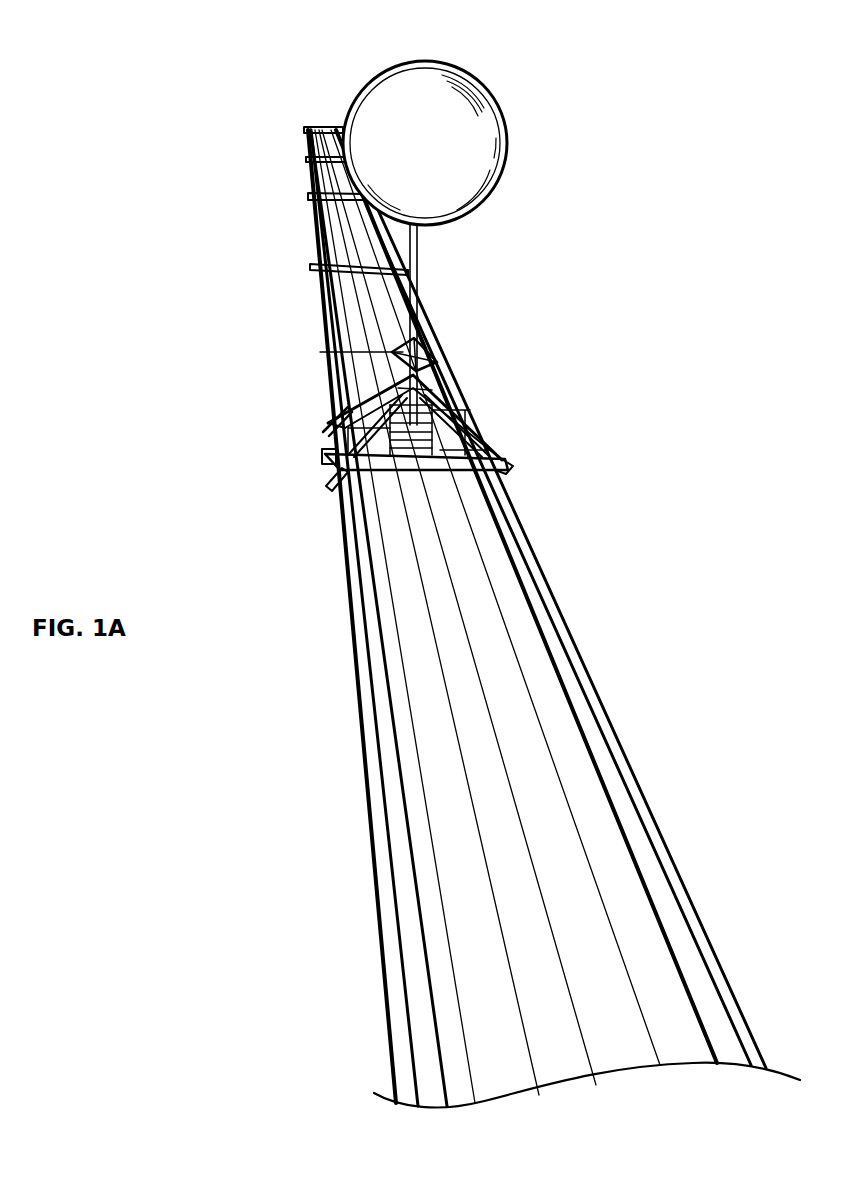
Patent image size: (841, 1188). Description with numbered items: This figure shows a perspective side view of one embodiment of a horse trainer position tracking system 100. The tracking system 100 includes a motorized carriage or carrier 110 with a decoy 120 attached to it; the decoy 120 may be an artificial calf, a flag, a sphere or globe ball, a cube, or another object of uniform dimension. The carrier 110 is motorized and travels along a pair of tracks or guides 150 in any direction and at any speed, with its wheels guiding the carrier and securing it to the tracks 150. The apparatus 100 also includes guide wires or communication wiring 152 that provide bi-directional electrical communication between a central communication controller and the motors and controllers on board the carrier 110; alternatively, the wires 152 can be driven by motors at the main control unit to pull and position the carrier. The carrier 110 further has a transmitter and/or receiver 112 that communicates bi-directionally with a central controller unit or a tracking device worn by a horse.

The tracking system 100 is at (211, 279).
The carrier 110 is at (470, 412).
The transmitter and/or receiver 112 is at (403, 352).
The decoy 120 is at (471, 82).
The tracks 150 is at (367, 520).
The communication wiring 152 is at (495, 706).